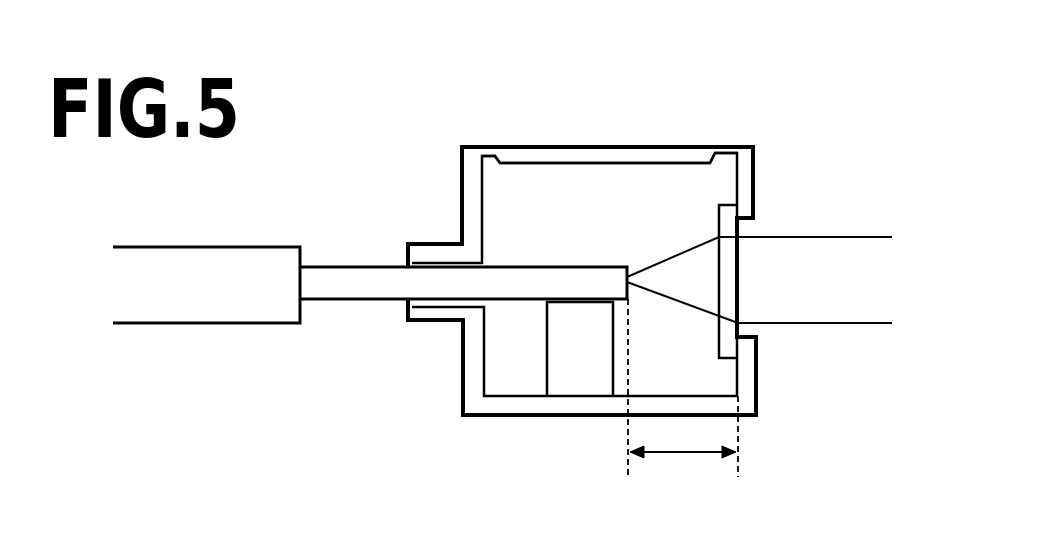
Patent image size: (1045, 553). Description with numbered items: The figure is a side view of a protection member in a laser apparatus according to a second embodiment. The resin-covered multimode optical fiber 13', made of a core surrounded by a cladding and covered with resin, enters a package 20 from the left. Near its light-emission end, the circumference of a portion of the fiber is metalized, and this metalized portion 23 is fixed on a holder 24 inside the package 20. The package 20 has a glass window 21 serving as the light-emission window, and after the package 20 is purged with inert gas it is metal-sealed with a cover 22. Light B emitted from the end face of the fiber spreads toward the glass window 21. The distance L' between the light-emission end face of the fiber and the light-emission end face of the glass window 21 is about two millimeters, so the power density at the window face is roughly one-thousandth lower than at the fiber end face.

The package 20 is at (738, 403).
The glass window 21 is at (723, 212).
The cover 22 is at (645, 153).
The metalized portion of the multimode optical fiber 23 is at (352, 300).
The holder 24 is at (573, 373).
The resin-covered multimode optical fiber 13' is at (206, 341).
The light beam B is at (800, 252).
The distance L' is at (683, 393).